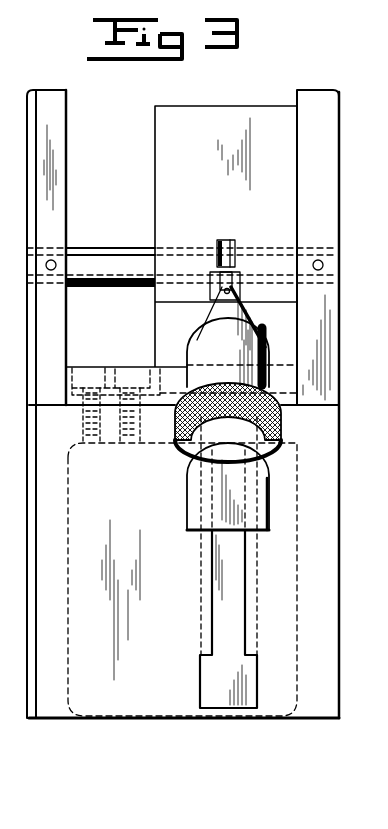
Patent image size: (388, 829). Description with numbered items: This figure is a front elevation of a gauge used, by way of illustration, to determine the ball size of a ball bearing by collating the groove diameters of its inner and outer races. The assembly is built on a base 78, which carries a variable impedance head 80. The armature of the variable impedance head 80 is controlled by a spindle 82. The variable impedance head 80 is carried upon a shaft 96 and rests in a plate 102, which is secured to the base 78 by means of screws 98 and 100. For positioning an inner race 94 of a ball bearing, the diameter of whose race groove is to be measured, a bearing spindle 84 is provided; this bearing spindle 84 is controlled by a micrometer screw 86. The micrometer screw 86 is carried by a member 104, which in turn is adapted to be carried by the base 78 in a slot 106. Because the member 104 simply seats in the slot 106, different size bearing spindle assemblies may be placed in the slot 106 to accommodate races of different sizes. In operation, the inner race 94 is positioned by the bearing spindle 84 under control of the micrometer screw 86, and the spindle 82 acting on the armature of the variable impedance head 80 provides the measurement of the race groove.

The base 78 is at (339, 513).
The variable impedance head 80 is at (298, 212).
The spindle 82 is at (223, 239).
The bearing spindle 84 is at (213, 290).
The micrometer screw 86 is at (283, 430).
The inner race 94 is at (235, 241).
The shaft 96 is at (100, 258).
The screw 98 is at (97, 447).
The screw 100 is at (135, 447).
The plate 102 is at (152, 364).
The member 104 is at (267, 349).
The slot 106 is at (233, 586).